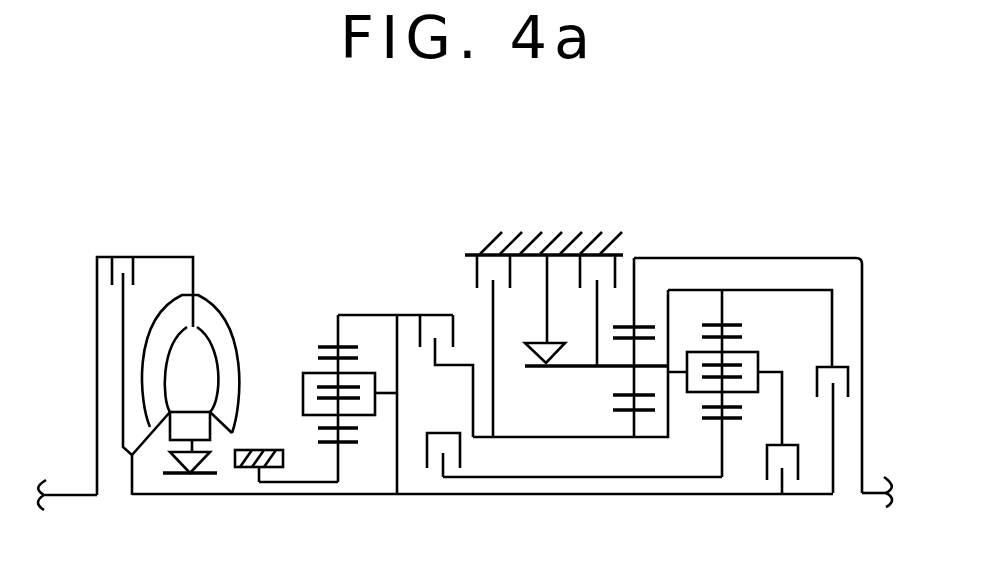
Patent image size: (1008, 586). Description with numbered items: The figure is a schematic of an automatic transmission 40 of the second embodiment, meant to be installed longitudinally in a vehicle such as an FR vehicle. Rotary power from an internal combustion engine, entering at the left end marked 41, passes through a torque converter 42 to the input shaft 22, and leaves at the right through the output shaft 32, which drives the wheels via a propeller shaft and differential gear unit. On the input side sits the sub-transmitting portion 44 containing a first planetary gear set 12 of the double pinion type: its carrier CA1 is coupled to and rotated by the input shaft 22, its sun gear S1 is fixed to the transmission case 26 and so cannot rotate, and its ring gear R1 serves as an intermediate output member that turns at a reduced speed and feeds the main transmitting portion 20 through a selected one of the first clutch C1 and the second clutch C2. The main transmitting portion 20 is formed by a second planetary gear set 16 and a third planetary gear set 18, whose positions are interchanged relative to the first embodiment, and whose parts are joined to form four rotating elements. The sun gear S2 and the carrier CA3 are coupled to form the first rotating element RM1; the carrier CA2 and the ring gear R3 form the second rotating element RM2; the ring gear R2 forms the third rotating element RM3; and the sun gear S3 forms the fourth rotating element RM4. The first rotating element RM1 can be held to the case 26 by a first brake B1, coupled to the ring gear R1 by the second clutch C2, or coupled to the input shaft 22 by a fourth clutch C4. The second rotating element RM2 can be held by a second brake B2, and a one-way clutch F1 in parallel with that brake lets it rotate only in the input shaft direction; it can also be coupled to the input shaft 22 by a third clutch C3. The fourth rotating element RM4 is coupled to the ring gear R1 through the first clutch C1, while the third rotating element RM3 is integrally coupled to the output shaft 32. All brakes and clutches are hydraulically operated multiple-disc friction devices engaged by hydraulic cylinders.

The first planetary gear set 12 is at (348, 346).
The second planetary gear set 16 is at (615, 473).
The third planetary gear set 18 is at (752, 353).
The main transmitting portion 20 is at (535, 317).
The input shaft 22 is at (222, 495).
The transmission case 26 is at (548, 228).
The output shaft 32 is at (878, 495).
The automatic transmission 40 is at (763, 321).
The engine side input member 41 is at (65, 495).
The torque converter 42 is at (172, 241).
The sub-transmitting portion 44 is at (332, 499).
The ring gear R1 is at (333, 345).
The carrier CA1 is at (305, 388).
The sun gear S1 is at (343, 443).
The first clutch C1 is at (431, 434).
The second clutch C2 is at (445, 358).
The third clutch C3 is at (814, 410).
The fourth clutch C4 is at (798, 446).
The first brake B1 is at (486, 314).
The second brake B2 is at (603, 278).
The one-way clutch F1 is at (533, 309).
The carrier CA2 is at (580, 368).
The ring gear R2 is at (648, 323).
The sun gear S2 is at (650, 412).
The ring gear R3 is at (730, 324).
The carrier CA3 is at (752, 395).
The sun gear S3 is at (718, 419).
The first rotating element RM1 is at (608, 438).
The second rotating element RM2 is at (735, 290).
The third rotating element RM3 is at (757, 257).
The fourth rotating element RM4 is at (537, 477).